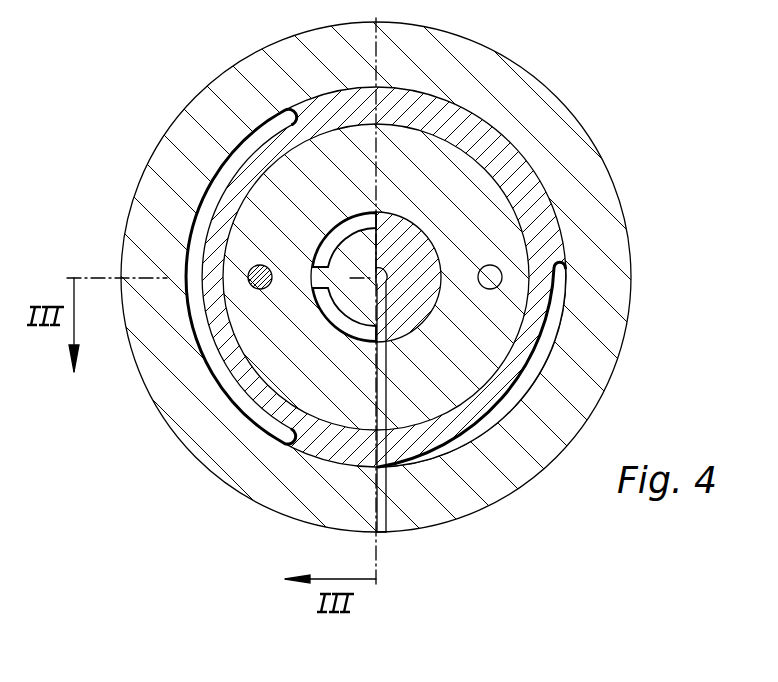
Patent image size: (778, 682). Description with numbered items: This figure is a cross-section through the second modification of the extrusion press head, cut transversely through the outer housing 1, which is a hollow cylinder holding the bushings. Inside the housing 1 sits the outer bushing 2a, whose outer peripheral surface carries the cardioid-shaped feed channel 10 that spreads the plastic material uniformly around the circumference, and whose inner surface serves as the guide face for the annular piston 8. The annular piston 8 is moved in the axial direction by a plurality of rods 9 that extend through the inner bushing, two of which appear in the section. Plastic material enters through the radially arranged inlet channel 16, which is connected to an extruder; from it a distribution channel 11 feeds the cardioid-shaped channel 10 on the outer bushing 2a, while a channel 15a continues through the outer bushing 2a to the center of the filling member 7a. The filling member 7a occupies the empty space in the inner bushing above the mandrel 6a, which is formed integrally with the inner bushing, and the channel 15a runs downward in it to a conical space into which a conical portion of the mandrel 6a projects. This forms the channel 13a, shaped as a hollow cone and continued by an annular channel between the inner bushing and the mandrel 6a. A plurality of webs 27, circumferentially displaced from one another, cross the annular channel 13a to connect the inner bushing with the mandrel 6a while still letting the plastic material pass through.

The outer housing 1 is at (512, 472).
The outer bushing 2a is at (316, 437).
The mandrel 6a is at (434, 190).
The filling member 7a is at (414, 264).
The annular piston 8 is at (250, 232).
The rods 9 is at (262, 266).
The cardioid-shaped feed channel 10 is at (215, 366).
The distribution channel 11 is at (459, 443).
The channel 13a is at (346, 324).
The channel 15a is at (387, 387).
The inlet channel 16 is at (381, 536).
The webs 27 is at (312, 279).